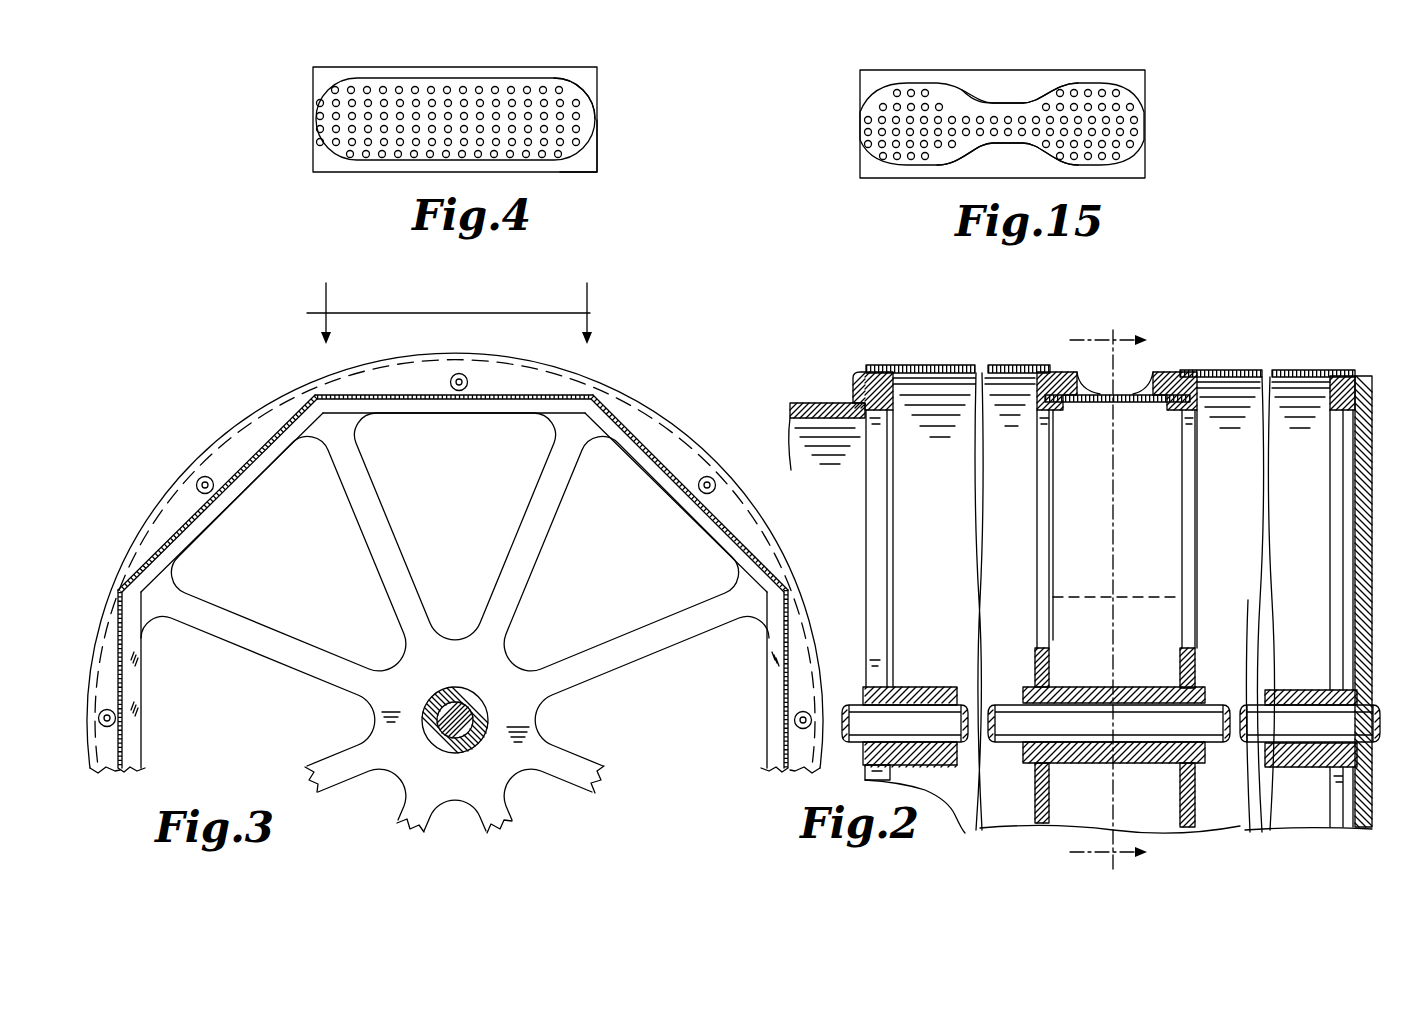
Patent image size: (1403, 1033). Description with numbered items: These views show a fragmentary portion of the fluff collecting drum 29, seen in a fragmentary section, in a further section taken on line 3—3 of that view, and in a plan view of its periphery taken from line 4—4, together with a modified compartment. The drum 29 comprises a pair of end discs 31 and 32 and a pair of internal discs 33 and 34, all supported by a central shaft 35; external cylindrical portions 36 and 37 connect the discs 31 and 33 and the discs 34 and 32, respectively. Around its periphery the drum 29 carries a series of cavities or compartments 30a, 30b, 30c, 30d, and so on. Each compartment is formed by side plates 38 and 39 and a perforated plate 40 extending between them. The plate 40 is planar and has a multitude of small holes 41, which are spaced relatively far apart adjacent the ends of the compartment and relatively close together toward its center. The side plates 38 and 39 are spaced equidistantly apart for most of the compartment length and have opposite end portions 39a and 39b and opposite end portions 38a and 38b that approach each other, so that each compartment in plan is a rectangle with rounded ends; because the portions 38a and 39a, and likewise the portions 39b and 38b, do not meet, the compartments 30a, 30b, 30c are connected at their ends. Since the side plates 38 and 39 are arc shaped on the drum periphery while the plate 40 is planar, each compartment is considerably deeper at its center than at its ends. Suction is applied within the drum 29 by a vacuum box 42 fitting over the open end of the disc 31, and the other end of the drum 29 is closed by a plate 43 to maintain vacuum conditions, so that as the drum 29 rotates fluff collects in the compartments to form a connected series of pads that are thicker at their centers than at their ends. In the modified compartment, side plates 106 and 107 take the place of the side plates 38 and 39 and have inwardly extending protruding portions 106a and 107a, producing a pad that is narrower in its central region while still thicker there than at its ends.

In FIG. 3, the drum 29 is at (145, 522).
In FIG. 3, the compartment 30a is at (795, 620).
In FIG. 3, the compartment 30b is at (655, 420).
In FIG. 3, the compartment 30c is at (520, 374).
In FIG. 2, the compartment 30c is at (1122, 394).
In FIG. 3, the compartment 30d is at (232, 447).
In FIG. 2, the end disc 31 is at (893, 405).
In FIG. 2, the end disc 32 is at (1340, 410).
In FIG. 2, the internal disc 33 is at (1037, 490).
In FIG. 2, the internal disc 34 is at (1197, 505).
In FIG. 2, the central shaft 35 is at (1135, 720).
In FIG. 2, the external cylindrical portion 36 is at (906, 365).
In FIG. 2, the external cylindrical portion 37 is at (1295, 370).
In FIG. 2, the side plate 38 is at (1055, 370).
In FIG. 4, the end portion 38a is at (322, 156).
In FIG. 4, the end portion 38b is at (595, 158).
In FIG. 2, the side plate 39 is at (1180, 370).
In FIG. 4, the end portion 39a is at (318, 80).
In FIG. 4, the end portion 39b is at (592, 80).
In FIG. 3, the perforated plate 40 is at (493, 402).
In FIG. 2, the perforated plate 40 is at (1097, 402).
In FIG. 4, the holes 41 is at (318, 118).
In FIG. 2, the vacuum box 42 is at (840, 403).
In FIG. 2, the plate 43 is at (1365, 376).
In FIG. 2, the section line 3— 3 is at (1095, 599).
In FIG. 3, the section line 4— 4 is at (454, 307).
In FIG. 15, the side plate 106 is at (937, 75).
In FIG. 15, the protruding portion 106a is at (1045, 100).
In FIG. 15, the side plate 107 is at (870, 170).
In FIG. 15, the protruding portion 107a is at (972, 148).